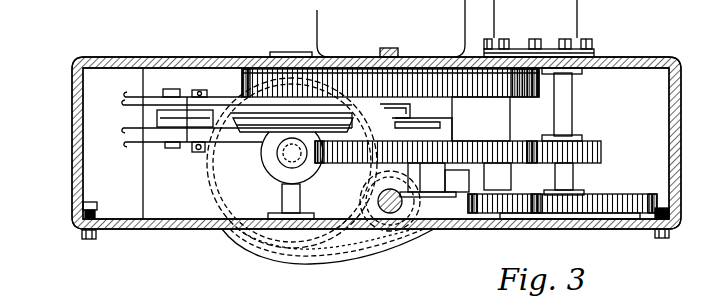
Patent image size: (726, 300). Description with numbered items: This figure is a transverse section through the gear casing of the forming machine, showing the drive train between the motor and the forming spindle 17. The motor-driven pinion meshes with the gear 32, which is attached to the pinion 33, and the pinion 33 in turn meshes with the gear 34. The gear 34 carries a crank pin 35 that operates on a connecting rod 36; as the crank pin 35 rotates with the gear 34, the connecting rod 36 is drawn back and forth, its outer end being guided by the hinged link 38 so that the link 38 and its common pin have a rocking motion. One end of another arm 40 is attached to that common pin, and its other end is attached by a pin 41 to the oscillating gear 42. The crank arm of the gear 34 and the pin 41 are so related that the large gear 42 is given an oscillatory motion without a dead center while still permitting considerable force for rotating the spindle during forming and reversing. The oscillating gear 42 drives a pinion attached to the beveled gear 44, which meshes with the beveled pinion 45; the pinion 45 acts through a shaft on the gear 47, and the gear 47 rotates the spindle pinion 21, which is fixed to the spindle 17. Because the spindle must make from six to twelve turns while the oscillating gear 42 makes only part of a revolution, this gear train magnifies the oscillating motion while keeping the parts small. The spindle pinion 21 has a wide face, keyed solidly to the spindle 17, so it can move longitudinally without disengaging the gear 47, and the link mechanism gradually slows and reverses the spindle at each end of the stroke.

The spindle 17 is at (396, 206).
The spindle pinion 21 is at (394, 236).
The gear 32 is at (655, 199).
The pinion 33 is at (592, 143).
The gear 34 is at (492, 141).
The crank pin 35 is at (407, 122).
The connecting rod 36 is at (200, 153).
The link 38 is at (165, 118).
The arm 40 is at (190, 88).
The pin 41 is at (395, 107).
The oscillating gear 42 is at (252, 95).
The beveled gear 44 is at (321, 126).
The beveled pinion 45 is at (275, 170).
The gear 47 is at (218, 196).